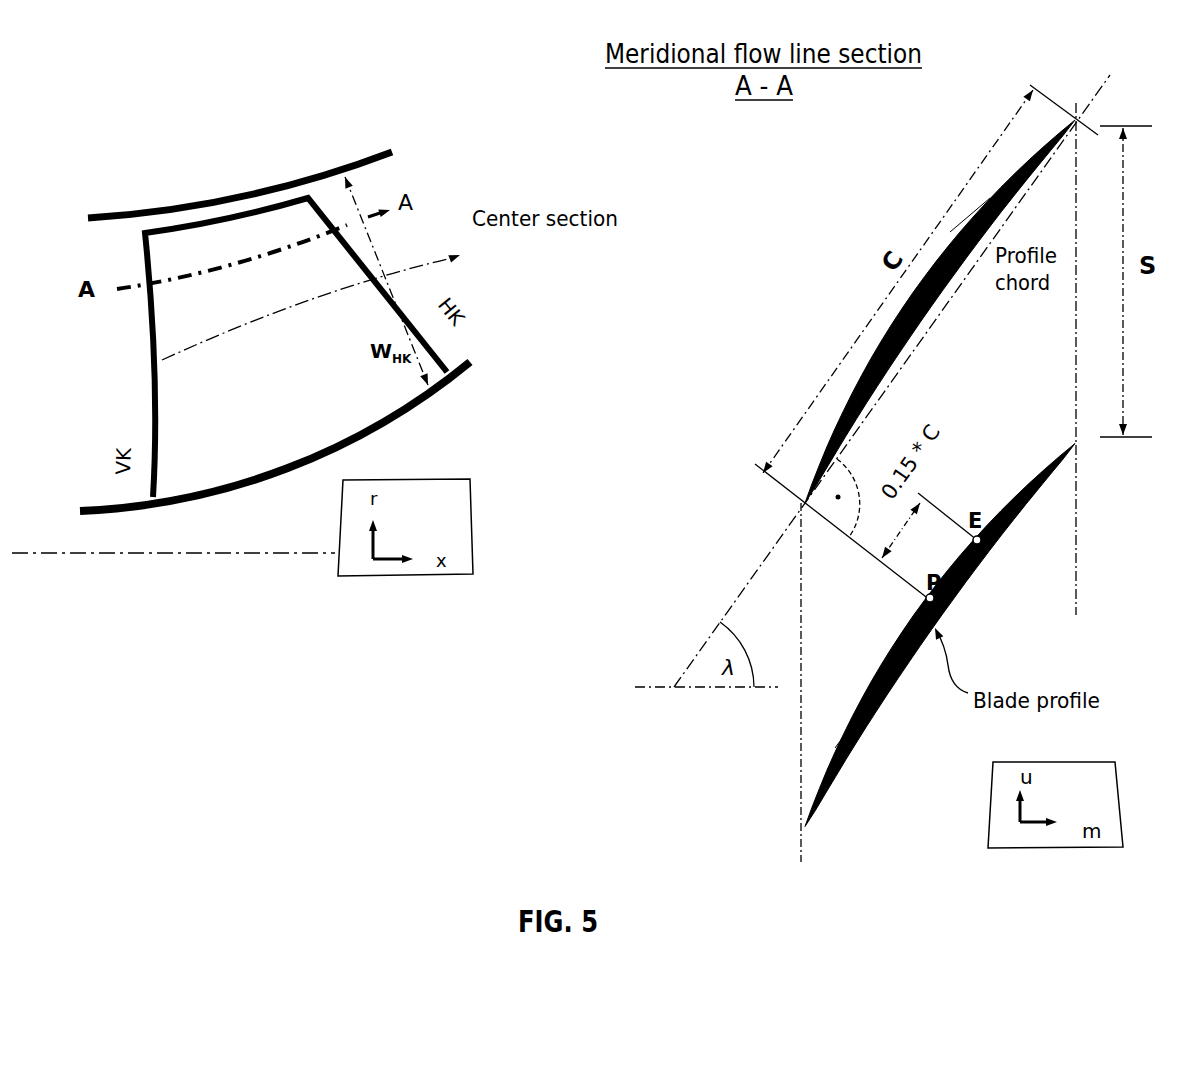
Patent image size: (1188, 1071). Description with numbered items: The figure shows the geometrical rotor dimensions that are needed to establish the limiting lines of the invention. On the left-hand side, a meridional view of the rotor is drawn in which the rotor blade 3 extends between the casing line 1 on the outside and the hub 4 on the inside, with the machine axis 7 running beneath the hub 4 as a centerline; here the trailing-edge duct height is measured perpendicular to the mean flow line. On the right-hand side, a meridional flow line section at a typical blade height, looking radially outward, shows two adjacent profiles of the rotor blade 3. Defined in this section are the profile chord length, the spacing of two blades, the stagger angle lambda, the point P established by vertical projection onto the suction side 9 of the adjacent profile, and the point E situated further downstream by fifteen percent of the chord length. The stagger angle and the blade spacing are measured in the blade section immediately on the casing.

The casing line 1 is at (153, 218).
The rotor blade 3 is at (338, 364).
The hub 4 is at (104, 518).
The machine axis 7 is at (215, 557).
The suction side 9 is at (968, 230).